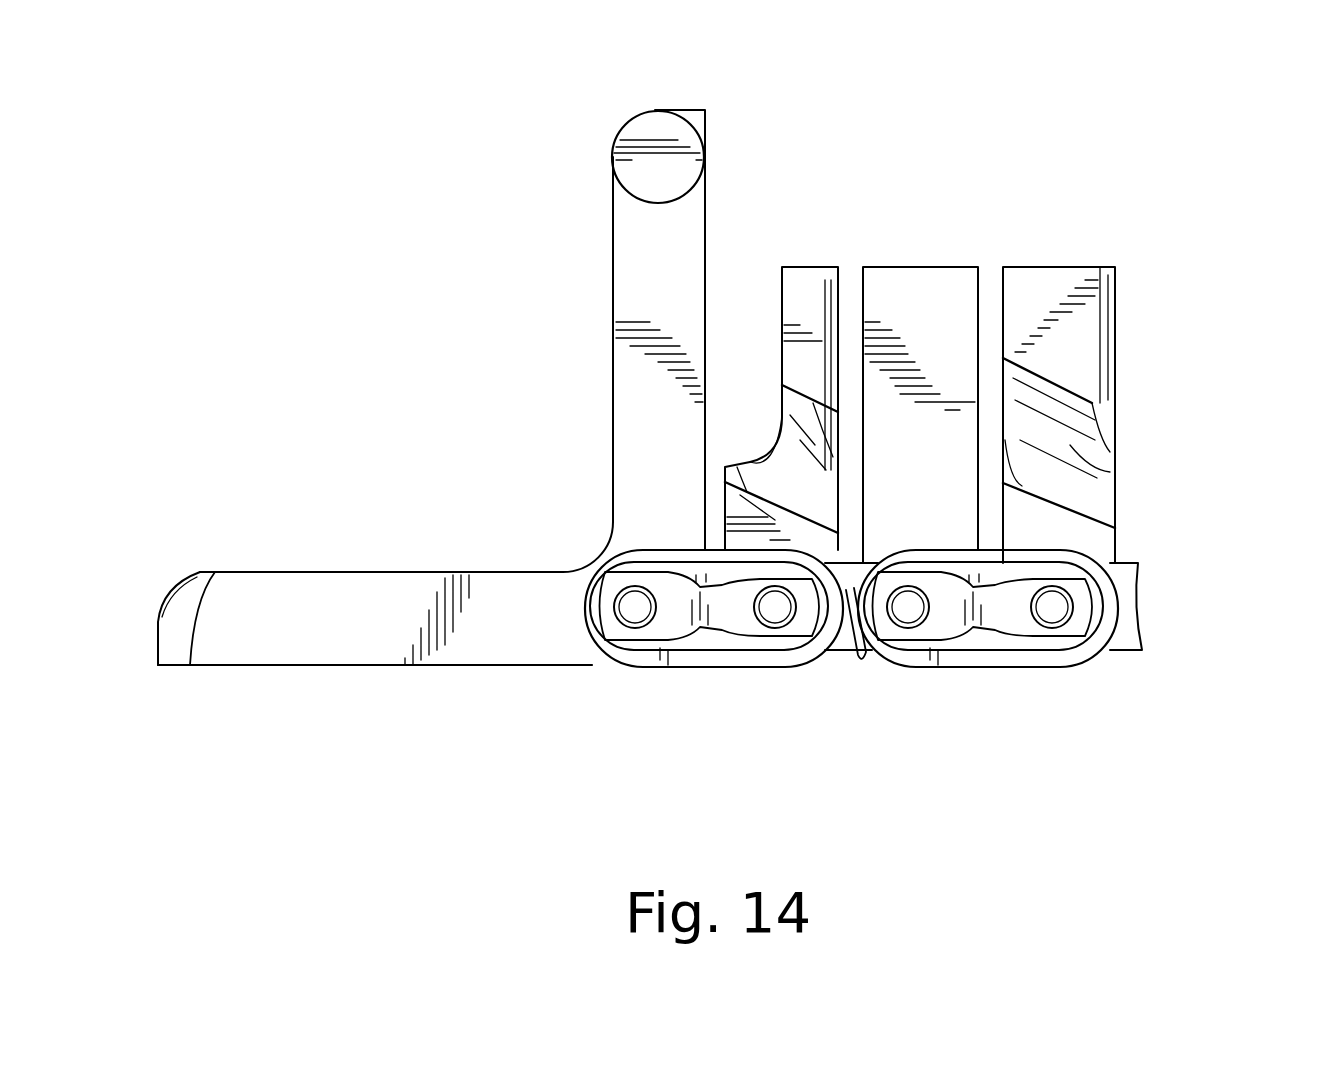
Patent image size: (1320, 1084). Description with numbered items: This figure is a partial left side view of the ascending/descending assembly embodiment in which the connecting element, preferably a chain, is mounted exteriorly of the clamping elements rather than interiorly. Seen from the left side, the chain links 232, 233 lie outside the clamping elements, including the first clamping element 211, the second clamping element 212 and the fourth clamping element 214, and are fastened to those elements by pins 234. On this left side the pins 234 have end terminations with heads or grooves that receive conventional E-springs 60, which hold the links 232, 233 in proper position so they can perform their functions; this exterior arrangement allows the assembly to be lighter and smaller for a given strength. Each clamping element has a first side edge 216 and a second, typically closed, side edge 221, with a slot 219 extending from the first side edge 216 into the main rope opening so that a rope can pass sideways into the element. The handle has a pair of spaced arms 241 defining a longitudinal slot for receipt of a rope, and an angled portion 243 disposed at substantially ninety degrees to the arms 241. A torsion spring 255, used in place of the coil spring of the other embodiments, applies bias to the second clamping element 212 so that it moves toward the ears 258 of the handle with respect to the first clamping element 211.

The E-springs 60 is at (1013, 635).
The first clamping element 211 is at (813, 278).
The second clamping element 212 is at (902, 265).
The fourth clamping element 214 is at (1048, 265).
The first side edge 216 is at (1060, 338).
The slot 219 is at (790, 473).
The second side edge 221 is at (948, 318).
The chain link 232 is at (873, 653).
The chain link 233 is at (701, 606).
The pins 234 is at (633, 607).
The spaced arms 241 is at (637, 262).
The angled portion 243 is at (355, 635).
The torsion spring 255 is at (868, 667).
The ears 258 is at (668, 132).